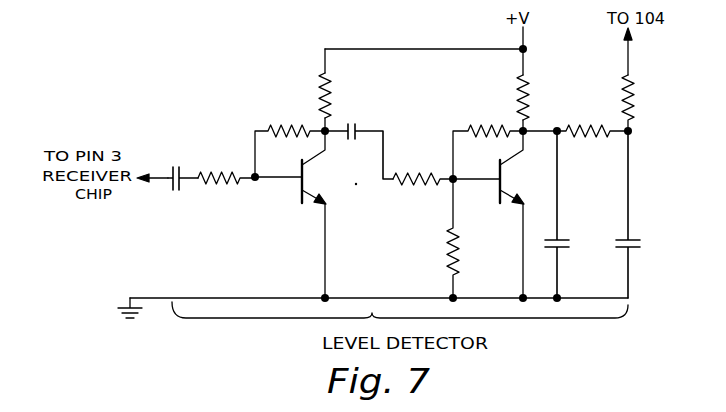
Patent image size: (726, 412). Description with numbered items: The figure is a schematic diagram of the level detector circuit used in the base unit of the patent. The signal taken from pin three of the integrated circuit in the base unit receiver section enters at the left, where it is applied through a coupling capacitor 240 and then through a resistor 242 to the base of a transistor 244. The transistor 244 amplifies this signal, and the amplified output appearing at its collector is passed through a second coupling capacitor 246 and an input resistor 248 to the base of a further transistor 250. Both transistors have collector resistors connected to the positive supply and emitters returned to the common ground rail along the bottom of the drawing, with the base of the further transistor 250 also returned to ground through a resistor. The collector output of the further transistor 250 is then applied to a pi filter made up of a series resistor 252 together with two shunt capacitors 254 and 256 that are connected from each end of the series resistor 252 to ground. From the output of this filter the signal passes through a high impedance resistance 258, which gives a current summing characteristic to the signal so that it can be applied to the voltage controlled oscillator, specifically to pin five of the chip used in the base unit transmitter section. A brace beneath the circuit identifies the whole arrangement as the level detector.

The coupling capacitor 240 is at (171, 176).
The resistor 242 is at (211, 186).
The transistor 244 is at (301, 164).
The coupling capacitor 246 is at (358, 130).
The input resistor 248 is at (418, 186).
The further transistor 250 is at (498, 164).
The series resistor 252 is at (600, 126).
The shunt capacitor 254 is at (566, 240).
The shunt capacitor 256 is at (639, 240).
The high impedance resistance 258 is at (634, 88).